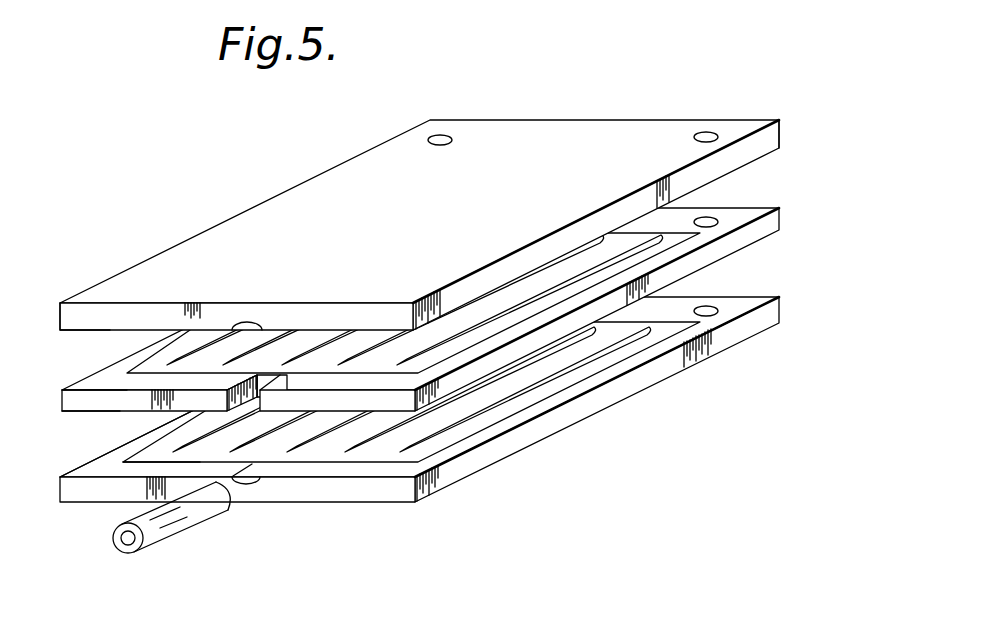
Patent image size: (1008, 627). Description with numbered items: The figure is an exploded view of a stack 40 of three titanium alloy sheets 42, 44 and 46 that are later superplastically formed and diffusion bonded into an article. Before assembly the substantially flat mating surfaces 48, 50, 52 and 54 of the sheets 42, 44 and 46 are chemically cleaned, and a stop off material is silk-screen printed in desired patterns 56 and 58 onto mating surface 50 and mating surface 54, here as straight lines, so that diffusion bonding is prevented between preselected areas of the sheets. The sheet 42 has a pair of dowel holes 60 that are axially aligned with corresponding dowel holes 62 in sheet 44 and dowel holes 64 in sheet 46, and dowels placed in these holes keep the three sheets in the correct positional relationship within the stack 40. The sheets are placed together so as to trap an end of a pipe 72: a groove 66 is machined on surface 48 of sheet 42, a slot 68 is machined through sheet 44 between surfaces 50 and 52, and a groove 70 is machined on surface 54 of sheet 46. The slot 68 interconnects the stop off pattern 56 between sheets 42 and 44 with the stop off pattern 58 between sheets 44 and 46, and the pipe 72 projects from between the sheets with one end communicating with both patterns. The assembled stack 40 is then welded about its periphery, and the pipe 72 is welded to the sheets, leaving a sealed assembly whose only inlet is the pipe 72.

The stack 40 is at (812, 203).
The sheet of titanium alloy 42 is at (440, 197).
The sheet of titanium alloy 44 is at (434, 324).
The sheet of titanium alloy 46 is at (448, 399).
The mating surface 48 is at (95, 340).
The mating surface 50 is at (105, 383).
The mating surface 52 is at (78, 414).
The mating surface 54 is at (143, 457).
The pattern of stop off material 56 is at (457, 350).
The pattern of stop off material 58 is at (591, 372).
The dowel holes 60 is at (706, 136).
The dowel holes 62 is at (712, 219).
The dowel holes 64 is at (707, 310).
The groove 66 is at (247, 322).
The slot 68 is at (226, 398).
The groove 70 is at (252, 479).
The pipe 72 is at (183, 508).